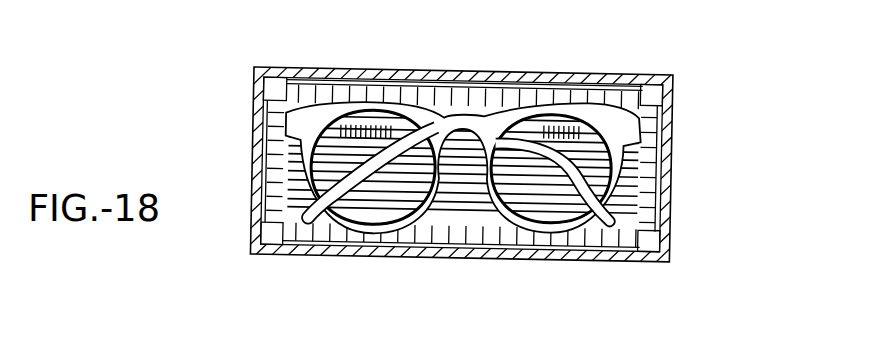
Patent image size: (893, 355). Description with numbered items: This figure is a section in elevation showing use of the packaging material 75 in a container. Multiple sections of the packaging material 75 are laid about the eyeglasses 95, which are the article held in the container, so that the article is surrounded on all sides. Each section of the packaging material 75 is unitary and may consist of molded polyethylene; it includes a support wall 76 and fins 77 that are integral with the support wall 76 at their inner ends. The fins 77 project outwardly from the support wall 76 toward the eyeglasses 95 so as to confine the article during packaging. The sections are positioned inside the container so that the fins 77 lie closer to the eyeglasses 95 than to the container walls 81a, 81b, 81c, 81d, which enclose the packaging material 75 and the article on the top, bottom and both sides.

The packaging material 75 is at (625, 82).
The support wall 76 is at (490, 79).
The fins 77 is at (558, 94).
The container wall 81a is at (462, 76).
The container wall 81b is at (536, 250).
The container wall 81c is at (675, 204).
The container wall 81d is at (253, 152).
The eyeglasses 95 is at (413, 100).